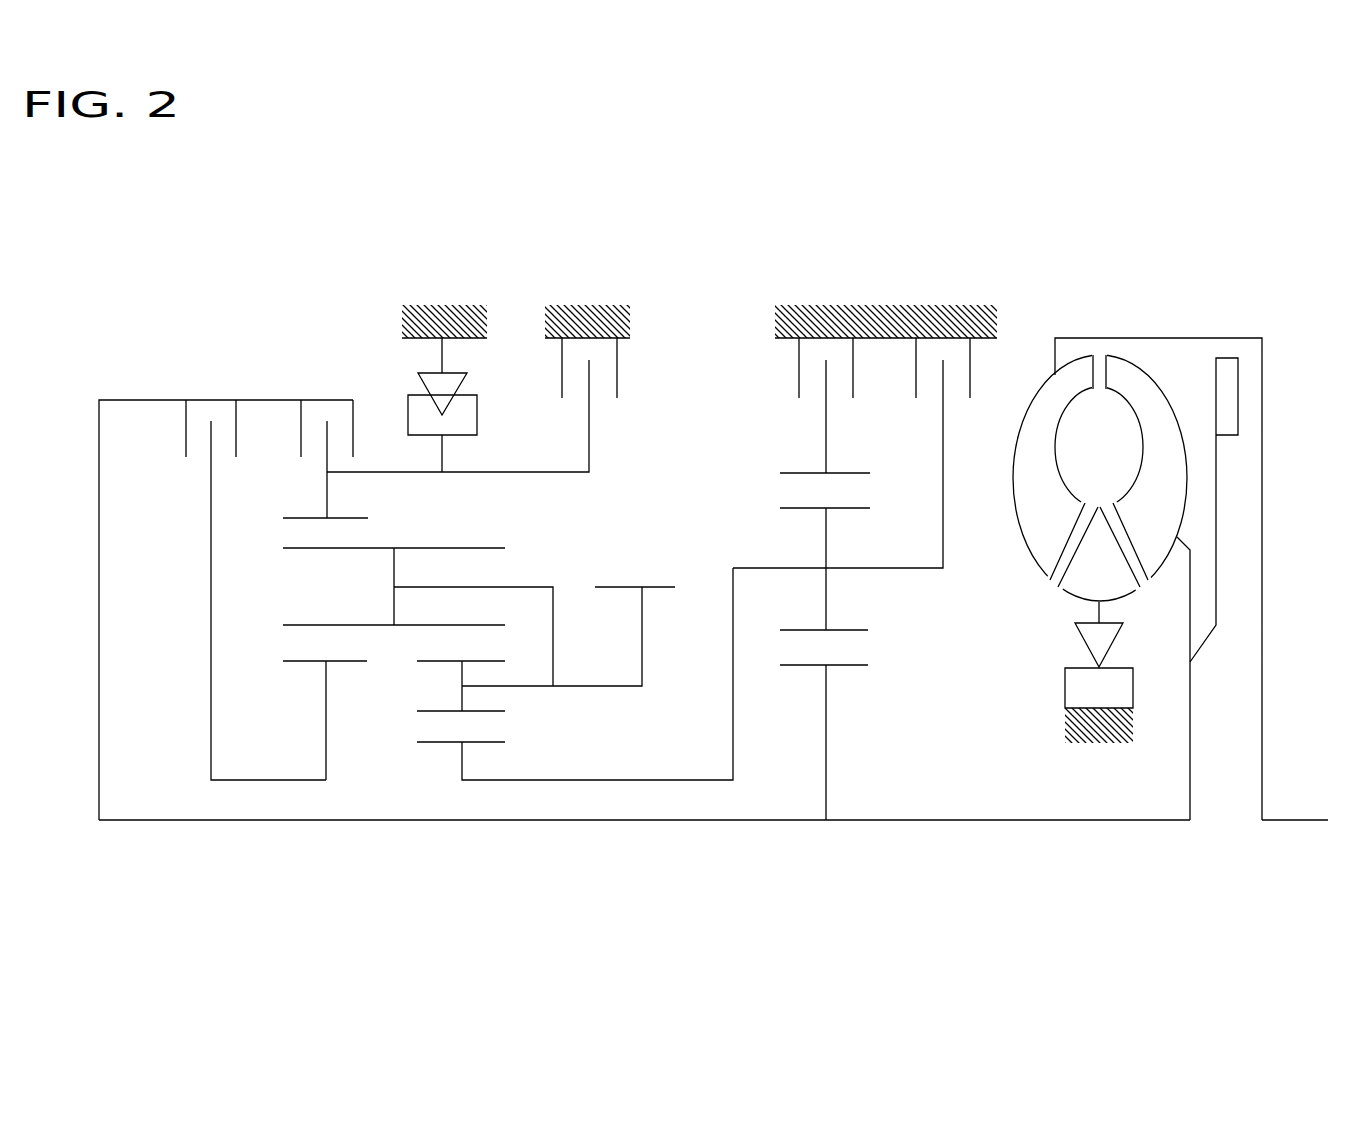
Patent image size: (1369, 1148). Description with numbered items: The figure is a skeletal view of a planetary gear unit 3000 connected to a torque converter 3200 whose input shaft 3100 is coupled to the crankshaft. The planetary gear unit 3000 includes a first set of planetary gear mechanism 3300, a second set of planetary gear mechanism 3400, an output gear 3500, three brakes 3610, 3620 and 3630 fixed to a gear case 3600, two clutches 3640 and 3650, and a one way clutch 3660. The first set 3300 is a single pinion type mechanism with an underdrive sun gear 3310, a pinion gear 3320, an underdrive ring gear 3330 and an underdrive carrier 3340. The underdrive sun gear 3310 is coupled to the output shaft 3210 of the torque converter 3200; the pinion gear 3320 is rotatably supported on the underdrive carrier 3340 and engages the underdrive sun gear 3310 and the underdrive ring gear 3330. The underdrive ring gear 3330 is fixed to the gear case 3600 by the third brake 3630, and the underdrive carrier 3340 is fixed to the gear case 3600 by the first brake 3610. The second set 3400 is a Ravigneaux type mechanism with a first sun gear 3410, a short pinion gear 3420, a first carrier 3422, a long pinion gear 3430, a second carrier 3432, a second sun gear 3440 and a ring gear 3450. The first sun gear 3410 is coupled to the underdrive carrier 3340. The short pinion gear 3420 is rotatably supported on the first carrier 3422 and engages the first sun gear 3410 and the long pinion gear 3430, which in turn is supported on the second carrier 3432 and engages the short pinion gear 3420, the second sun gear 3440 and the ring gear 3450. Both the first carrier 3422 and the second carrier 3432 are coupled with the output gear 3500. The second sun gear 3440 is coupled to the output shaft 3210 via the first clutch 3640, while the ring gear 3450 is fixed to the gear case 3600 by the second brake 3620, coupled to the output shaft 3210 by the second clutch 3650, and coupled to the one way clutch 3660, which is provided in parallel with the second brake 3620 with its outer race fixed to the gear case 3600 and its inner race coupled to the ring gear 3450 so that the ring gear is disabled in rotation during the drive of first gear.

The planetary gear unit 3000 is at (718, 207).
The input shaft 3100 is at (1292, 822).
The torque converter 3200 is at (1131, 308).
The output shaft 3210 is at (965, 820).
The first set of planetary gear mechanism 3300 is at (822, 838).
The sun gear S (UD) 3310 is at (840, 708).
The pinion gear 3320 is at (855, 622).
The ring gear R (UD) 3330 is at (837, 463).
The carrier C (UD) 3340 is at (943, 530).
The second set of planetary gear mechanism 3400 is at (458, 838).
The sun gear S (D) 3410 is at (517, 740).
The short pinion gear 3420 is at (415, 671).
The carrier C (1) 3422 is at (530, 688).
The long pinion gear 3430 is at (502, 545).
The carrier C (2) 3432 is at (485, 587).
The sun gear S (S) 3440 is at (305, 671).
The ring gear R (1) (R (2)) 3450 is at (357, 497).
The output gear 3500 is at (662, 575).
The gear case 3600 is at (445, 302).
The B1 brake 3610 is at (960, 403).
The B2 brake 3620 is at (608, 403).
The B3 brake 3630 is at (795, 403).
The C1 clutch 3640 is at (178, 440).
The C2 clutch 3650 is at (292, 440).
The one way clutch F 3660 is at (405, 382).